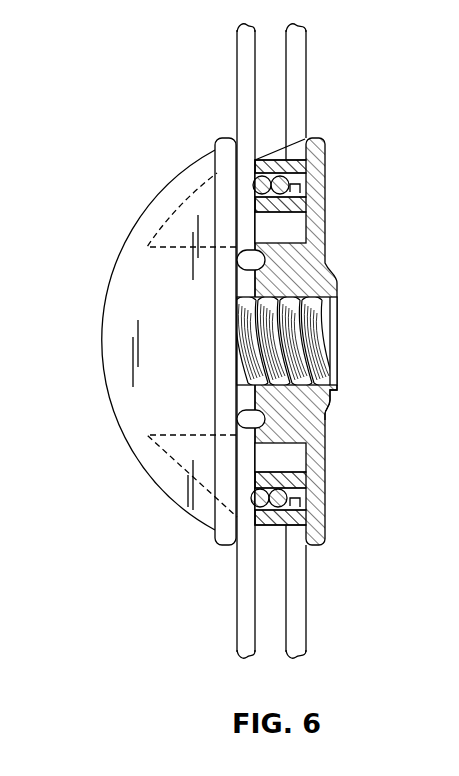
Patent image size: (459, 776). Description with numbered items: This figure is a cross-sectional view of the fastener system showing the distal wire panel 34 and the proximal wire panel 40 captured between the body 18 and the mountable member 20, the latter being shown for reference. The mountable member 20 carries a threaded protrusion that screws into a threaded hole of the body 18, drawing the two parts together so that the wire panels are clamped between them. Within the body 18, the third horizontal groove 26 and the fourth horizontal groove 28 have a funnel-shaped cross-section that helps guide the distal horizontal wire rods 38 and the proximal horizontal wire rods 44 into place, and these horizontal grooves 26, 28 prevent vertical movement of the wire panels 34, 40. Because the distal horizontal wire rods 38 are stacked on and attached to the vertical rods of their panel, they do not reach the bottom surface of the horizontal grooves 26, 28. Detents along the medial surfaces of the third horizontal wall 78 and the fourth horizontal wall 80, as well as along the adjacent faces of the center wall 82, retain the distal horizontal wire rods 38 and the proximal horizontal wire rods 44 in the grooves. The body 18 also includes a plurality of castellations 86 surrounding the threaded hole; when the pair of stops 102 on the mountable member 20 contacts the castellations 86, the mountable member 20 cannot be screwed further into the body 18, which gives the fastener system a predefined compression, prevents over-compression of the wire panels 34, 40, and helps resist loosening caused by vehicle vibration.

The body 18 is at (227, 326).
The mountable member 20 is at (98, 306).
The third horizontal groove 26 is at (302, 184).
The fourth horizontal groove 28 is at (258, 516).
The distal wire panel 34 is at (306, 622).
The distal horizontal wire rods 38 is at (289, 183).
The proximal wire panel 40 is at (236, 624).
The proximal horizontal wire rods 44 is at (256, 179).
The third horizontal wall 78 is at (255, 160).
The fourth horizontal wall 80 is at (260, 515).
The center wall 82 is at (257, 200).
The castellations 86 is at (326, 418).
The pair of stops 102 is at (240, 259).